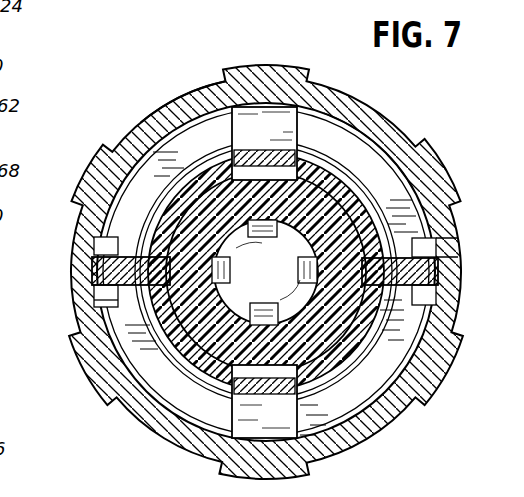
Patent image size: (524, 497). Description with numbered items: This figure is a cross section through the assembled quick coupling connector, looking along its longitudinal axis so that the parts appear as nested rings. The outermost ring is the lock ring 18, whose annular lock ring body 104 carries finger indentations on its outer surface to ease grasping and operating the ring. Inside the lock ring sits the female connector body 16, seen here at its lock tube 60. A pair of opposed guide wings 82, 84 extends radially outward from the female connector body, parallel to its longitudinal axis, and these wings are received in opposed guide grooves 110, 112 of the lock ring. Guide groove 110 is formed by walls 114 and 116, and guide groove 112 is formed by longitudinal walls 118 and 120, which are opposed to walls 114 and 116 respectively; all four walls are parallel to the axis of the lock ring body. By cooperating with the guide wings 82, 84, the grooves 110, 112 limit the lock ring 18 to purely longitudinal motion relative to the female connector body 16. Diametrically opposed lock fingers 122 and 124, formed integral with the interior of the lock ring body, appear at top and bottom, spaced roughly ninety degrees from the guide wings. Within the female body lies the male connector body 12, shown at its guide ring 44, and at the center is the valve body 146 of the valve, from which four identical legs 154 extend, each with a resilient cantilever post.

The male connector body 12 is at (165, 105).
The female connector body 16 is at (188, 392).
The lock ring 18 is at (191, 86).
The guide ring 44 is at (312, 208).
The lock tube 60 is at (402, 417).
The guide wing 82 is at (93, 260).
The guide wing 84 is at (462, 248).
The lock ring body 104 is at (391, 126).
The guide groove 110 is at (100, 292).
The guide groove 112 is at (438, 283).
The wall 114 is at (105, 237).
The wall 116 is at (110, 293).
The longitudinal wall 118 is at (462, 248).
The longitudinal wall 120 is at (462, 328).
The lock finger 122 is at (306, 122).
The lock finger 124 is at (359, 437).
The valve body 146 is at (322, 193).
The leg 154 is at (268, 307).